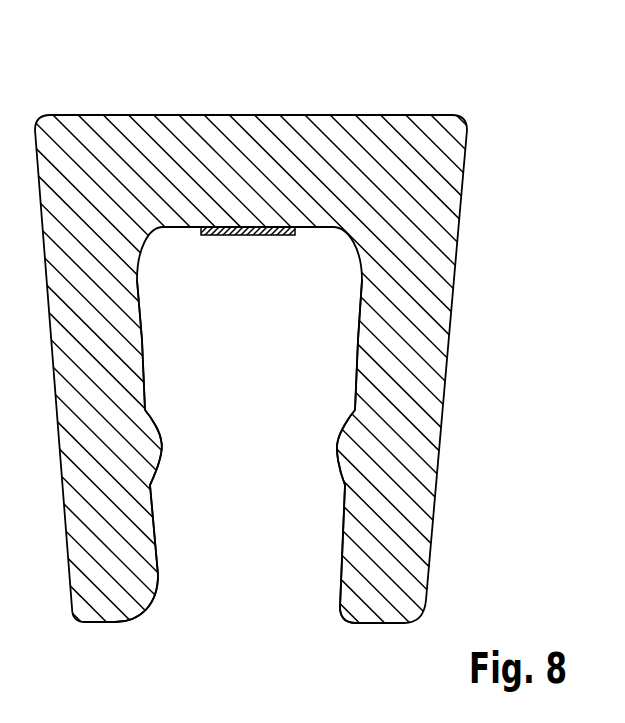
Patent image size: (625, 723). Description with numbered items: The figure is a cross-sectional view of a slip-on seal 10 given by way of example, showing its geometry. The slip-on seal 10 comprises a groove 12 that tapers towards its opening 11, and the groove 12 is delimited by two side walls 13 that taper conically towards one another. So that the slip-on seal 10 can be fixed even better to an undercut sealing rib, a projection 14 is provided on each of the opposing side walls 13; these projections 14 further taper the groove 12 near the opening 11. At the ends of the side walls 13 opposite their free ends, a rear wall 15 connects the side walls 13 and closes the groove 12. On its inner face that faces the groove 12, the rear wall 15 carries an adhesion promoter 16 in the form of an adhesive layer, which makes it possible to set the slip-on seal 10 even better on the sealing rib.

The slip-on seal 10 is at (456, 90).
The opening 11 is at (292, 611).
The groove 12 is at (205, 513).
The side walls 13 is at (143, 337).
The projection 14 is at (166, 445).
The rear wall 15 is at (248, 114).
The adhesion promoter 16 is at (254, 237).